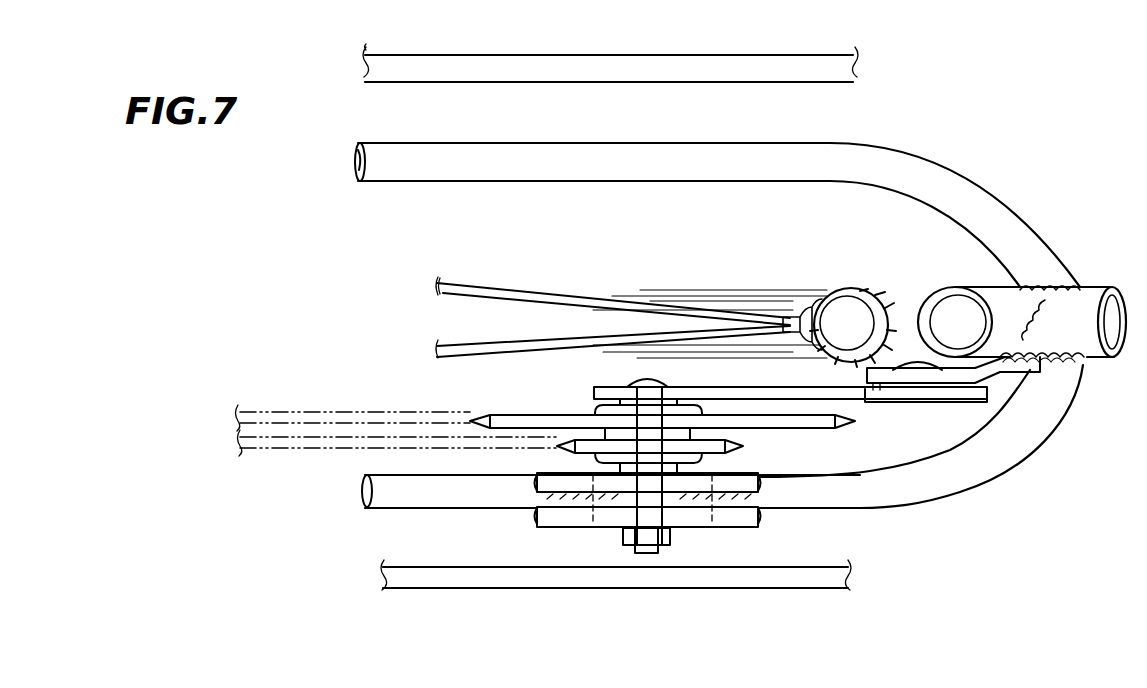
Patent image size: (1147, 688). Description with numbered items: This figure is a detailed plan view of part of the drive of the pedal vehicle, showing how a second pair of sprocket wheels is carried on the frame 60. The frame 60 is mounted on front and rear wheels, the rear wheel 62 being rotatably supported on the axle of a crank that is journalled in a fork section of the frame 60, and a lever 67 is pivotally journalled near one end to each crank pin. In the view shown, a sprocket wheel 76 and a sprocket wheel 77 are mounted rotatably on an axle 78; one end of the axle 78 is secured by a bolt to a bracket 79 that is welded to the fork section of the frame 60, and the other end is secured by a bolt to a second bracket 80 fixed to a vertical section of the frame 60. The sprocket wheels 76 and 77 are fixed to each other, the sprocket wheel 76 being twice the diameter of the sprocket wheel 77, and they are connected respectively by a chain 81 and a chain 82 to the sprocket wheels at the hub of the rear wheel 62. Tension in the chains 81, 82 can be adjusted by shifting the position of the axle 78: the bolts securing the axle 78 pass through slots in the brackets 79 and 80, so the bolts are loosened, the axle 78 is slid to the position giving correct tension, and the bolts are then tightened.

The frame 60 is at (800, 157).
The rear wheel 62 is at (801, 272).
The lever 67 is at (540, 75).
The sprocket wheel 76 is at (810, 425).
The sprocket wheel 77 is at (705, 450).
The axle 78 is at (665, 555).
The bracket 79 is at (553, 483).
The second bracket 80 is at (773, 392).
The chain 81 is at (255, 410).
The chain 82 is at (303, 448).